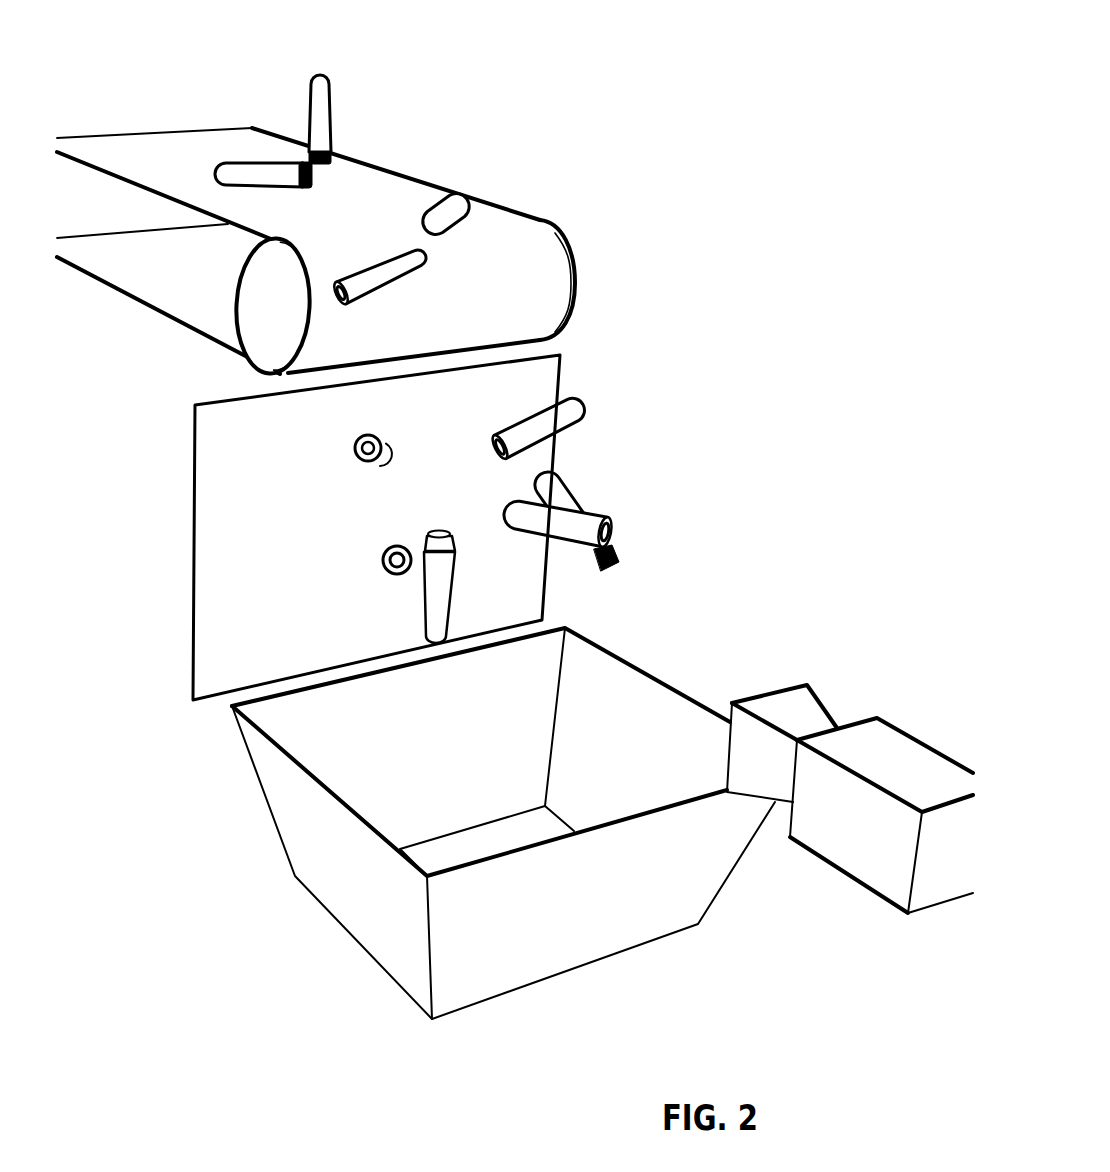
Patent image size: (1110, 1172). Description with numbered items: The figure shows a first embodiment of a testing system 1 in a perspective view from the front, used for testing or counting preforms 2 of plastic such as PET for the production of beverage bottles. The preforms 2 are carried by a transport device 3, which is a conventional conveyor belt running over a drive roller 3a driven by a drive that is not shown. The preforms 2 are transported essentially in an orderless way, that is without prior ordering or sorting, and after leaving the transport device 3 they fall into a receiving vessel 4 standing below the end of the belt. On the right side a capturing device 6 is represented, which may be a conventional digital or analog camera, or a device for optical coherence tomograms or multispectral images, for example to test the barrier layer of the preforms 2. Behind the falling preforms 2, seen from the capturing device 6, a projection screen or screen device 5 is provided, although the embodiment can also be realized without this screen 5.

The testing system 1 is at (713, 164).
The preforms 2 is at (437, 213).
The transport device 3 is at (143, 307).
The drive roller 3a is at (275, 317).
The receiving vessel 4 is at (347, 908).
The projection screen 5 is at (220, 553).
The capturing device 6 is at (890, 768).